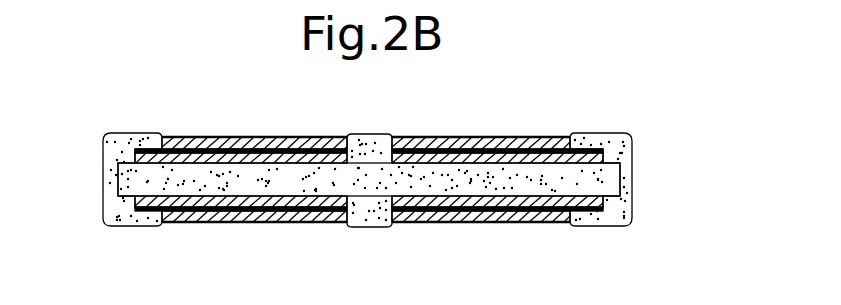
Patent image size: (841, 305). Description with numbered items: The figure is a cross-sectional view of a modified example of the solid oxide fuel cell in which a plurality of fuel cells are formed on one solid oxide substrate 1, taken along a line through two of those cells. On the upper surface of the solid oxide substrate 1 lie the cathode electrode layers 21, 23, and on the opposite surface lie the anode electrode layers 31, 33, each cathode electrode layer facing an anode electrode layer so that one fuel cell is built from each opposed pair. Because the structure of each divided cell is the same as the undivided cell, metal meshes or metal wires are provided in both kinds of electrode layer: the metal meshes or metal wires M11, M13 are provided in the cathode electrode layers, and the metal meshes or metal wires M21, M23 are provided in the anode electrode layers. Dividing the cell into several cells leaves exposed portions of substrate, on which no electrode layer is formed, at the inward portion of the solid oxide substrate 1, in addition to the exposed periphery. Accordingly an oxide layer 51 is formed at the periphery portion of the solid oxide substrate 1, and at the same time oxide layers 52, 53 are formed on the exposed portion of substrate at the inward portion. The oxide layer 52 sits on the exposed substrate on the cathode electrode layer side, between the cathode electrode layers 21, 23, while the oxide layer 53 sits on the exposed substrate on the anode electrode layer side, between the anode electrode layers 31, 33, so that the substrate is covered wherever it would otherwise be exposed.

The solid oxide substrate 1 is at (133, 178).
The oxide layer 51 is at (103, 148).
The oxide layer 52 is at (375, 134).
The oxide layer 53 is at (372, 228).
The cathode electrode layer 21 is at (445, 137).
The cathode electrode layer 23 is at (285, 137).
The anode electrode layer 31 is at (453, 222).
The anode electrode layer 33 is at (305, 222).
The metal mesh or metal wire M11 is at (533, 137).
The metal mesh or metal wire M13 is at (208, 137).
The metal mesh or metal wire M21 is at (533, 222).
The metal mesh or metal wire M23 is at (220, 222).